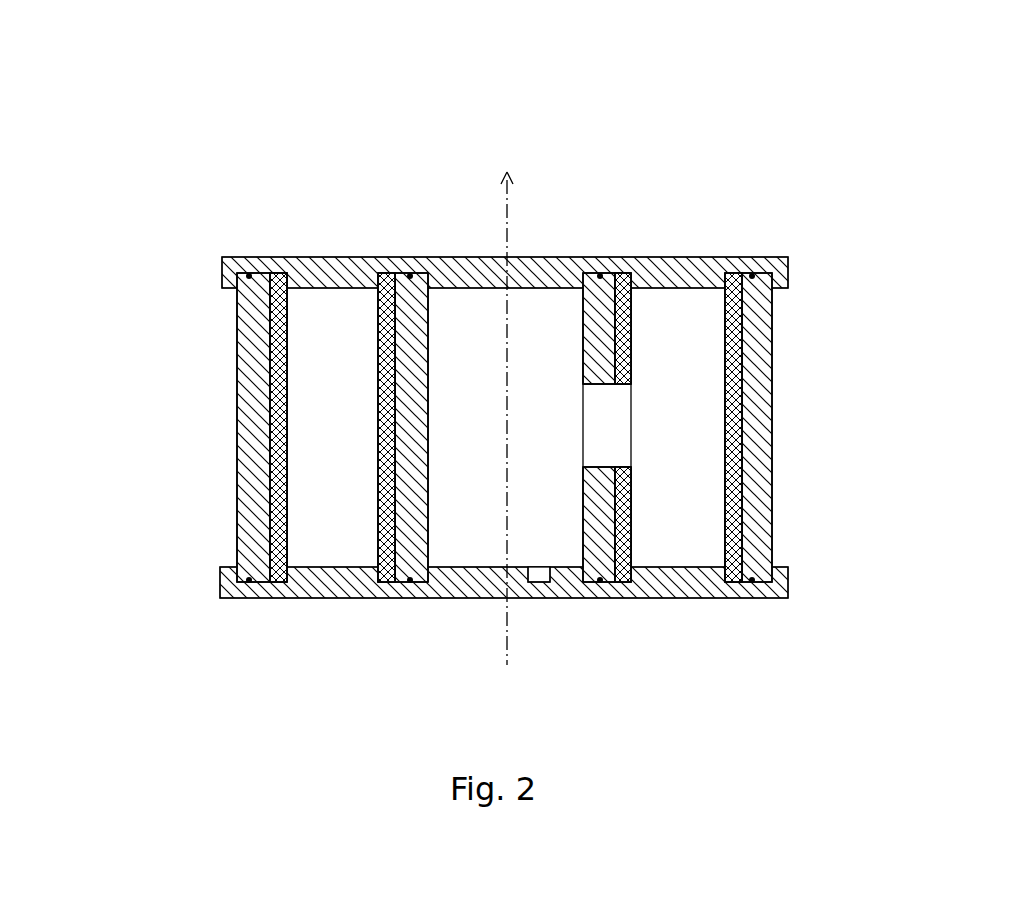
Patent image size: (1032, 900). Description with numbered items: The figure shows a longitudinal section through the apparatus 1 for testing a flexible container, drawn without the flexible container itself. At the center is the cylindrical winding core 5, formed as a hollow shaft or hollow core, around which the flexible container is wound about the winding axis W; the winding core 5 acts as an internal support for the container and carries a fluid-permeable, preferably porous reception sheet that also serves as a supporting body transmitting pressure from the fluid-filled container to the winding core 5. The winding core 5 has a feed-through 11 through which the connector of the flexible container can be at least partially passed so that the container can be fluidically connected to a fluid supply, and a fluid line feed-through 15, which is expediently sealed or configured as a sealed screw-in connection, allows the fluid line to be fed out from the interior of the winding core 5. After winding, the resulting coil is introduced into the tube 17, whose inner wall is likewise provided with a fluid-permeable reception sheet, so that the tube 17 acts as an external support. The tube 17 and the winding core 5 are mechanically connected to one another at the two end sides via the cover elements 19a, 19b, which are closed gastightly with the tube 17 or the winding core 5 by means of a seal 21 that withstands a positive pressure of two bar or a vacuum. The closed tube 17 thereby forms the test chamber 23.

The apparatus 1 is at (690, 70).
The winding core 5 is at (440, 275).
The feed-through 11 is at (614, 437).
The fluid line feed-through 15 is at (538, 590).
The tube 17 is at (248, 352).
The cover element 19a is at (685, 257).
The cover element 19b is at (703, 598).
The seal 21 is at (750, 257).
The test chamber 23 is at (240, 260).